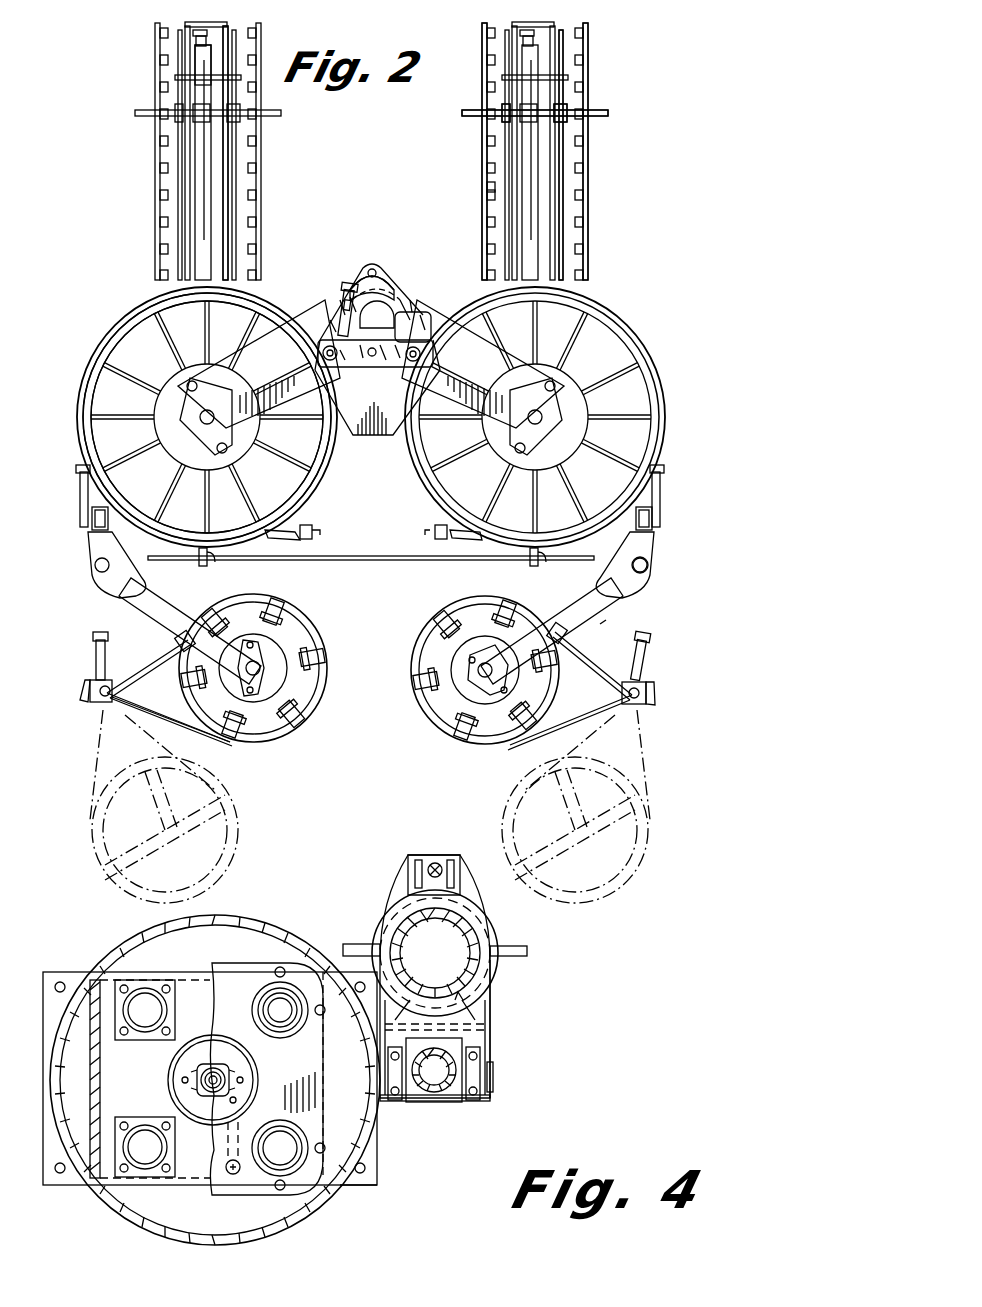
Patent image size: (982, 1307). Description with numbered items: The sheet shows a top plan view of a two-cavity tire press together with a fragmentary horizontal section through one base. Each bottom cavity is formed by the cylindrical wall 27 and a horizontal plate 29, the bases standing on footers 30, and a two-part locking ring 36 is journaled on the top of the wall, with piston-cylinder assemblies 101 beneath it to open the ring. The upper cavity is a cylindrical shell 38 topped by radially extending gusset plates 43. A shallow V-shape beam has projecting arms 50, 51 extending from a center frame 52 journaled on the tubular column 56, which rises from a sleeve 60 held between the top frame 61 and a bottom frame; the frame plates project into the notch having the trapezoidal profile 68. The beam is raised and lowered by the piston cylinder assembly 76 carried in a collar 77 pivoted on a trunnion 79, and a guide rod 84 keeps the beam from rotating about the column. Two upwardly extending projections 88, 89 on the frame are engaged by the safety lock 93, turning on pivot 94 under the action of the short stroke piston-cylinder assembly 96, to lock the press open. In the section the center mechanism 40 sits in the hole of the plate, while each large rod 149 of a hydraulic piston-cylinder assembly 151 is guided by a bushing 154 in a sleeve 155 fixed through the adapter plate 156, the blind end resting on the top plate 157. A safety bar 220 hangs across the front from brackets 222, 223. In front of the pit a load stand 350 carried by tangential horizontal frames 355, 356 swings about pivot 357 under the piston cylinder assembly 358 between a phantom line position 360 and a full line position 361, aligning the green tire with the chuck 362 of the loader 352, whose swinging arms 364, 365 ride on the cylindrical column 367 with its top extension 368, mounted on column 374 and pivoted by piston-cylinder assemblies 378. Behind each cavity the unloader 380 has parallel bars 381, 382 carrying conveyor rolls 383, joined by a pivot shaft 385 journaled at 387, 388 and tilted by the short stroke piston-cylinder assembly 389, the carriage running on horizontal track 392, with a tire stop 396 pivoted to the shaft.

In FIG. 4, the cylindrical wall 27 is at (285, 935).
In FIG. 4, the horizontal plate 29 is at (372, 1133).
In FIG. 4, the footers 30 is at (370, 1174).
In FIG. 2, the two-part locking ring 36 is at (80, 428).
In FIG. 2, the cylindrical shell 38 is at (84, 450).
In FIG. 4, the center mechanism 40 is at (250, 1070).
In FIG. 2, the gusset plates 43 is at (92, 373).
In FIG. 2, the projecting arm 50 is at (279, 340).
In FIG. 2, the projecting arm 51 is at (458, 320).
In FIG. 2, the center frame 52 is at (405, 294).
In FIG. 2, the tubular column 56 is at (378, 296).
In FIG. 4, the tubular column 56 is at (397, 918).
In FIG. 4, the sleeve 60 is at (490, 1001).
In FIG. 4, the top frame 61 is at (488, 980).
In FIG. 2, the trapezoidal profile 68 is at (380, 438).
In FIG. 4, the piston cylinder assembly 76 is at (440, 1092).
In FIG. 4, the collar 77 is at (458, 1098).
In FIG. 4, the trunnion 79 is at (493, 1074).
In FIG. 4, the guide rod 84 is at (435, 864).
In FIG. 2, the upwardly extending projection 88 is at (322, 368).
In FIG. 2, the upwardly extending projection 89 is at (424, 366).
In FIG. 2, the safety lock 93 is at (410, 338).
In FIG. 2, the pivot 94 is at (373, 357).
In FIG. 2, the short stroke piston-cylinder assembly 96 is at (345, 300).
In FIG. 2, the piston-cylinder assemblies 101 is at (298, 535).
In FIG. 4, the rod 149 is at (284, 1020).
In FIG. 4, the hydraulic piston-cylinder assembly 151 is at (143, 1166).
In FIG. 4, the bushing 154 is at (271, 983).
In FIG. 4, the sleeve 155 is at (254, 1008).
In FIG. 4, the adapter plate 156 is at (255, 1180).
In FIG. 4, the top plate 157 is at (198, 1165).
In FIG. 2, the safety bar 220 is at (350, 562).
In FIG. 2, the bracket 222 is at (203, 562).
In FIG. 2, the bracket 223 is at (540, 562).
In FIG. 2, the load stand 350 is at (410, 726).
In FIG. 2, the loader 352 is at (600, 624).
In FIG. 2, the tangential horizontal frame 355 is at (156, 663).
In FIG. 2, the tangential horizontal frame 356 is at (198, 738).
In FIG. 2, the pivot 357 is at (652, 688).
In FIG. 2, the piston cylinder assembly 358 is at (650, 654).
In FIG. 2, the phantom line position 360 is at (240, 825).
In FIG. 2, the full line position 361 is at (291, 726).
In FIG. 2, the chuck 362 is at (290, 630).
In FIG. 2, the swinging arm 364 is at (133, 596).
In FIG. 2, the swinging arm 365 is at (566, 620).
In FIG. 2, the cylindrical column 367 is at (650, 564).
In FIG. 2, the top extension 368 is at (230, 46).
In FIG. 2, the column 374 is at (654, 510).
In FIG. 2, the piston-cylinder assemblies 378 is at (660, 488).
In FIG. 2, the unloader 380 is at (597, 93).
In FIG. 2, the parallel bar 381 is at (483, 160).
In FIG. 2, the parallel bar 382 is at (589, 183).
In FIG. 2, the conveyor rolls 383 is at (490, 186).
In FIG. 2, the pivot shaft 385 is at (598, 114).
In FIG. 2, the journal 387 is at (508, 120).
In FIG. 2, the journal 388 is at (562, 120).
In FIG. 2, the short stroke piston-cylinder assembly 389 is at (200, 63).
In FIG. 2, the horizontal track 392 is at (205, 206).
In FIG. 2, the tire stop 396 is at (566, 48).